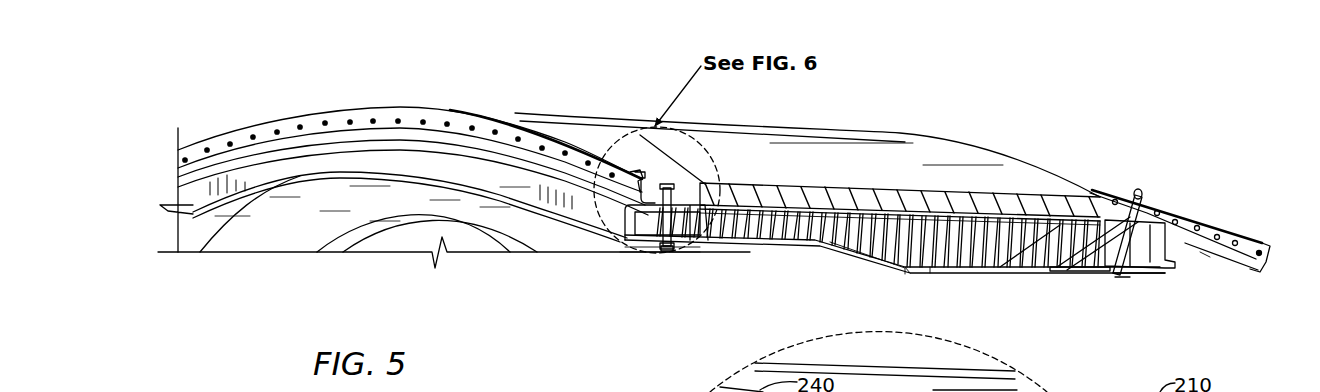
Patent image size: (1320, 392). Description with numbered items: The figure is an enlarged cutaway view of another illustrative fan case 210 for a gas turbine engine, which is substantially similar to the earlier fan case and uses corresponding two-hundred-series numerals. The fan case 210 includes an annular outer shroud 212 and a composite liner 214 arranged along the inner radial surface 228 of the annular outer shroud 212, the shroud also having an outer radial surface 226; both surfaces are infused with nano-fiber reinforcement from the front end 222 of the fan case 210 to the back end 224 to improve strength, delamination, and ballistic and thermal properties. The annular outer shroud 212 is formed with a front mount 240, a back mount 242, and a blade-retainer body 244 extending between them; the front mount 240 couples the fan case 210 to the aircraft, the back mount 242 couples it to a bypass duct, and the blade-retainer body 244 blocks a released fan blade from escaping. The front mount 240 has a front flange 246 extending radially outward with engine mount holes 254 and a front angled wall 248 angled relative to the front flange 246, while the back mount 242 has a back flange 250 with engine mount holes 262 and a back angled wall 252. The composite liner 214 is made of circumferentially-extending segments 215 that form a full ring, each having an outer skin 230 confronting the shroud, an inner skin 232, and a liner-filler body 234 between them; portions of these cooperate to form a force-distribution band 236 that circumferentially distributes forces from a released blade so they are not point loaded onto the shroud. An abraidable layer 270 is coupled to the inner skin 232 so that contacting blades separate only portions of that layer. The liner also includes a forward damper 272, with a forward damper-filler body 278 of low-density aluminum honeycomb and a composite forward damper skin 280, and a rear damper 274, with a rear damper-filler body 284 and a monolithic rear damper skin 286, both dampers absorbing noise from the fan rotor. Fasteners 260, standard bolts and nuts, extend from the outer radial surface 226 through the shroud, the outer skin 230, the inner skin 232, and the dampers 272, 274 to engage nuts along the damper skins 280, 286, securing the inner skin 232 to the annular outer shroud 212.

The fan case 210 is at (1078, 120).
The annular outer shroud 212 is at (890, 158).
The composite liner 214 is at (1013, 292).
The circumferentially-extending segment 215 is at (346, 179).
The front end 222 is at (298, 100).
The back end 224 is at (1264, 232).
The outer radial surface 226 is at (778, 187).
The inner radial surface 228 is at (863, 208).
The outer skin 230 is at (813, 240).
The inner skin 232 is at (874, 250).
The liner-filler body 234 is at (937, 273).
The force-distribution band 236 is at (787, 256).
The front mount 240 is at (509, 115).
The back mount 242 is at (1190, 182).
The blade-retainer body 244 is at (930, 202).
The front flange 246 is at (444, 124).
The front angled wall 248 is at (645, 186).
The back flange 250 is at (1230, 239).
The back angled wall 252 is at (1206, 252).
The engine mount holes 254 is at (396, 118).
The fasteners 260 is at (674, 192).
The engine mount holes 262 is at (1153, 212).
The abraidable layer 270 is at (965, 275).
The forward damper 272 is at (641, 258).
The rear damper 274 is at (1133, 285).
The forward damper-filler body 278 is at (737, 245).
The forward damper skin 280 is at (670, 245).
The rear damper-filler body 284 is at (1066, 263).
The rear damper skin 286 is at (1080, 273).